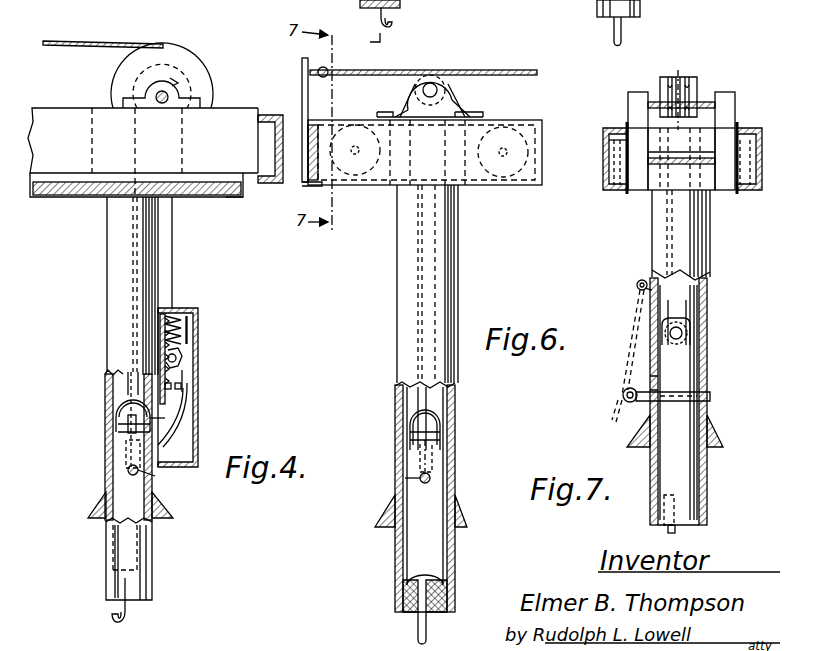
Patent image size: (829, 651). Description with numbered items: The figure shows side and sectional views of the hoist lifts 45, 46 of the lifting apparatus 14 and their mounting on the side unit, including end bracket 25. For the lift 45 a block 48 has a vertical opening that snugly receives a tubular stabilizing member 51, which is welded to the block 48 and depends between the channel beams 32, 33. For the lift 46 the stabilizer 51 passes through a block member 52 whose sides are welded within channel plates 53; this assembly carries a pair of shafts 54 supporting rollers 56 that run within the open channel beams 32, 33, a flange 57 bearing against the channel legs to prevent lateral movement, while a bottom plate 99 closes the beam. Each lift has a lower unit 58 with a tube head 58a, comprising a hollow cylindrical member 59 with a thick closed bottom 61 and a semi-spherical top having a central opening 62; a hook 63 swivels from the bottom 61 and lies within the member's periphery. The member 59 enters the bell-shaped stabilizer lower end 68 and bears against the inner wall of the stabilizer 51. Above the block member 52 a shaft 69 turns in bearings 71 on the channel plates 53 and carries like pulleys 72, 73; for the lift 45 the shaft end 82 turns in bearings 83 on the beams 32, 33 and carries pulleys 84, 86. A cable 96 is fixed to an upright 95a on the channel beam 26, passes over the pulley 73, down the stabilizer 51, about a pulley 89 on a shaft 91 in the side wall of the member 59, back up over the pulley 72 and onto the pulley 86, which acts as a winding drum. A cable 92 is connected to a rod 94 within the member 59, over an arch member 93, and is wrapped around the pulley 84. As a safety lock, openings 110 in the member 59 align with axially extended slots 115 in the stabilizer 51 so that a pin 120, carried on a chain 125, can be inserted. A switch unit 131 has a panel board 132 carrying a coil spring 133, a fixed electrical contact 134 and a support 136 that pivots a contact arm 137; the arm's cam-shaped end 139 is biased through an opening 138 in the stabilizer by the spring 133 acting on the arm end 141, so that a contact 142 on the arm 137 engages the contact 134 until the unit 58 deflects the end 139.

In FIG. 6, the hoist assembly 14 is at (377, 52).
In FIG. 4, the end bracket 25 is at (270, 115).
In FIG. 6, the channel beam 26 is at (312, 186).
In FIG. 7, the channel beam 32 is at (604, 172).
In FIG. 4, the channel beam 33 is at (45, 118).
In FIG. 6, the channel beam 33 is at (530, 120).
In FIG. 7, the channel beam 33 is at (762, 142).
In FIG. 4, the lift 45 is at (176, 240).
In FIG. 6, the lift 46 is at (466, 66).
In FIG. 7, the lift 46 is at (736, 84).
In FIG. 4, the block 48 is at (105, 122).
In FIG. 4, the tubular stabilizing member 51 is at (110, 265).
In FIG. 6, the tubular stabilizing member 51 is at (456, 270).
In FIG. 7, the tubular stabilizing member 51 is at (712, 255).
In FIG. 6, the block member 52 is at (460, 170).
In FIG. 7, the block member 52 is at (658, 180).
In FIG. 7, the channel plate 53 is at (627, 190).
In FIG. 7, the shaft 54 is at (686, 170).
In FIG. 6, the roller 56 is at (544, 122).
In FIG. 7, the roller 56 is at (610, 148).
In FIG. 7, the flange 57 is at (626, 126).
In FIG. 4, the lower unit 58 is at (156, 557).
In FIG. 6, the lower unit 58 is at (456, 558).
In FIG. 7, the lower unit 58 is at (712, 485).
In FIG. 6, the tube head 58a is at (399, 4).
In FIG. 7, the tube head 58a is at (645, 8).
In FIG. 4, the cylindrical member 59 is at (156, 568).
In FIG. 6, the cylindrical member 59 is at (448, 574).
In FIG. 7, the cylindrical member 59 is at (700, 512).
In FIG. 4, the bottom 61 is at (152, 594).
In FIG. 6, the bottom 61 is at (448, 598).
In FIG. 7, the bottom 61 is at (656, 512).
In FIG. 4, the central opening 62 is at (126, 396).
In FIG. 6, the central opening 62 is at (432, 403).
In FIG. 4, the hook 63 is at (113, 616).
In FIG. 4, the stabilizer lower end 68 is at (176, 515).
In FIG. 6, the stabilizer lower end 68 is at (462, 520).
In FIG. 7, the stabilizer lower end 68 is at (722, 440).
In FIG. 6, the shaft 69 is at (438, 90).
In FIG. 7, the shaft 69 is at (650, 100).
In FIG. 6, the bearing 71 is at (450, 108).
In FIG. 7, the bearing 71 is at (736, 108).
In FIG. 7, the pulley 72 is at (662, 80).
In FIG. 6, the pulley 73 is at (433, 72).
In FIG. 7, the pulley 73 is at (698, 80).
In FIG. 4, the shaft end 82 is at (182, 118).
In FIG. 4, the bearing 83 is at (190, 108).
In FIG. 4, the pulley 84 is at (190, 82).
In FIG. 4, the pulley 86 is at (200, 68).
In FIG. 6, the pulley 89 is at (442, 418).
In FIG. 7, the pulley 89 is at (692, 316).
In FIG. 6, the shaft 91 is at (410, 427).
In FIG. 4, the cable 92 is at (131, 385).
In FIG. 4, the arch member 93 is at (116, 417).
In FIG. 4, the rod 94 is at (112, 432).
In FIG. 6, the upright 95a is at (300, 78).
In FIG. 4, the cable 96 is at (88, 42).
In FIG. 6, the cable 96 is at (392, 76).
In FIG. 4, the bottom plate 99 is at (226, 197).
In FIG. 4, the opening 110 is at (128, 472).
In FIG. 6, the opening 110 is at (432, 475).
In FIG. 4, the slot 115 is at (112, 458).
In FIG. 6, the slot 115 is at (446, 444).
In FIG. 7, the slot 115 is at (645, 384).
In FIG. 4, the pin 120 is at (156, 476).
In FIG. 6, the pin 120 is at (420, 478).
In FIG. 7, the pin 120 is at (712, 395).
In FIG. 7, the chain 125 is at (632, 358).
In FIG. 4, the switch unit 131 is at (258, 304).
In FIG. 4, the panel board 132 is at (160, 345).
In FIG. 4, the coil spring 133 is at (184, 318).
In FIG. 4, the electrical contact 134 is at (182, 383).
In FIG. 4, the support 136 is at (179, 358).
In FIG. 4, the contact arm 137 is at (182, 392).
In FIG. 4, the opening 138 is at (165, 418).
In FIG. 4, the arm end 139 is at (176, 415).
In FIG. 4, the arm end 141 is at (212, 305).
In FIG. 4, the contact 142 is at (190, 394).